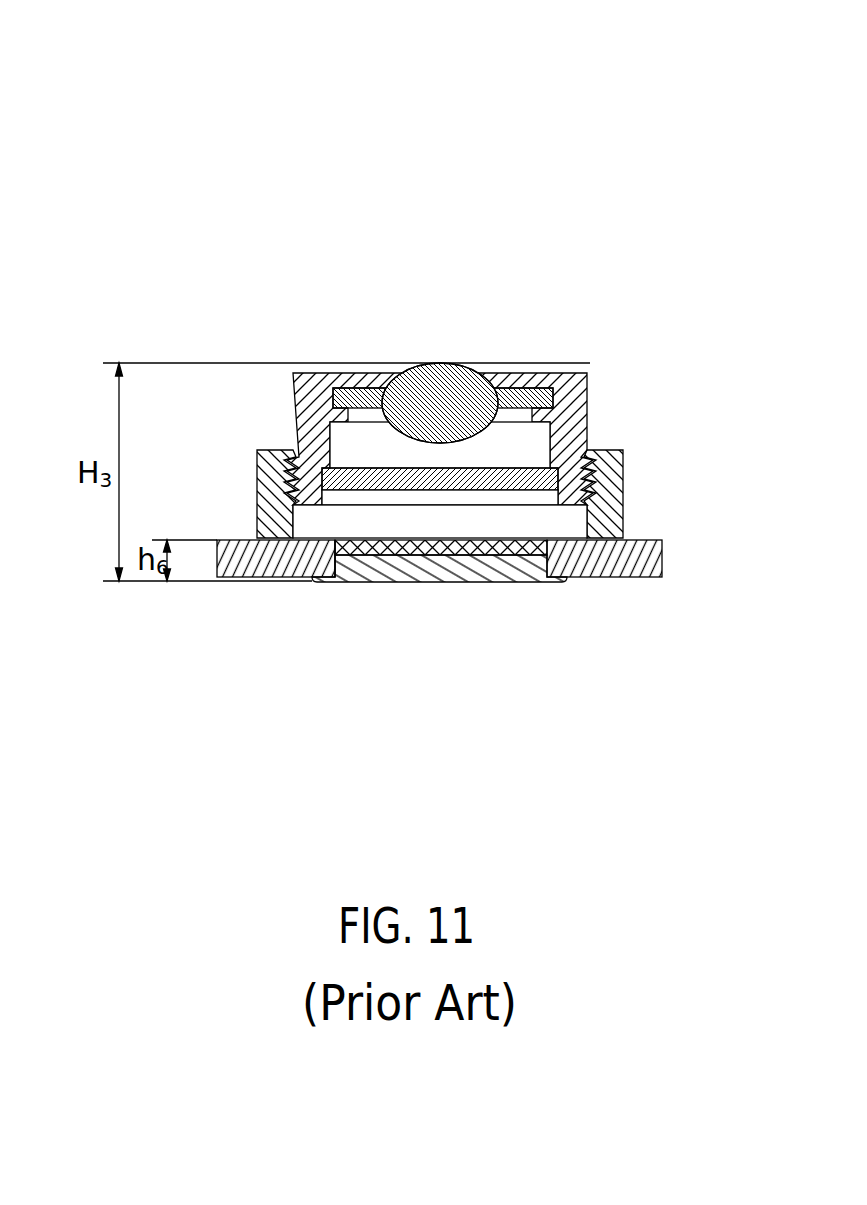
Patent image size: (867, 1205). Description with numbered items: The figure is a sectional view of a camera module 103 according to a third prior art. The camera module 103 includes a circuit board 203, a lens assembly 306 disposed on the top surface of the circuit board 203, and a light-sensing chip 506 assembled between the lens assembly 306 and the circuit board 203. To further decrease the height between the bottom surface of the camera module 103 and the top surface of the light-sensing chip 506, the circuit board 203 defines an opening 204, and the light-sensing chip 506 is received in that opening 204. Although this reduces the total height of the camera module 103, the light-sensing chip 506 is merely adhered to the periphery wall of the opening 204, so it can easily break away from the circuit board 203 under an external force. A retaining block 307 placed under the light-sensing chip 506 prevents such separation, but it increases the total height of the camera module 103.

The camera module 103 is at (93, 80).
The lens assembly 306 is at (388, 312).
The circuit board 203 is at (615, 560).
The opening 204 is at (337, 548).
The light-sensing chip 506 is at (400, 556).
The retaining block 307 is at (483, 572).